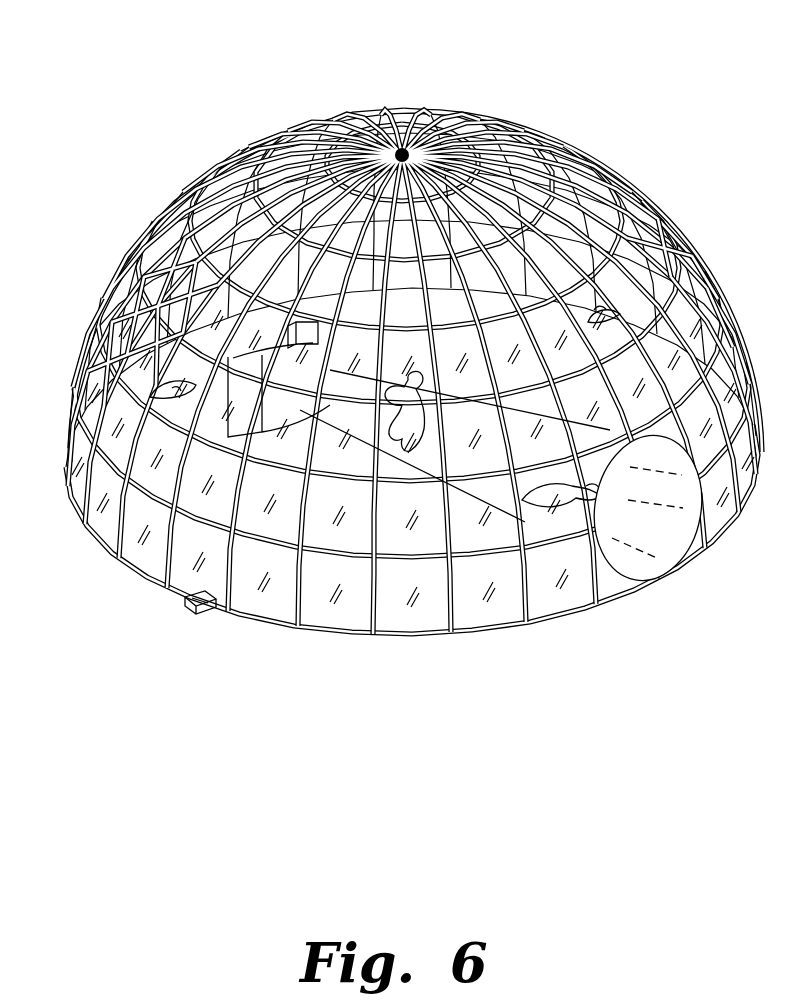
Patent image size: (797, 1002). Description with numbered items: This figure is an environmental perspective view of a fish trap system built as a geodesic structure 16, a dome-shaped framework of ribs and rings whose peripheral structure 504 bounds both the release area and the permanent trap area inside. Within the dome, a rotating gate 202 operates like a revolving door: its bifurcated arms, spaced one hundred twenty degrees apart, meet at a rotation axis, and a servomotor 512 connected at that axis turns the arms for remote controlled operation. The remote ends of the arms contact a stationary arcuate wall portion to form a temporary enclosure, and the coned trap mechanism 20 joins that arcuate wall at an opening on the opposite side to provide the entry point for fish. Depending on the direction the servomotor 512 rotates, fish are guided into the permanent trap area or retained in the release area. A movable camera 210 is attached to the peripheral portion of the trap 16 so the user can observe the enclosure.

The geodesic structure 16 is at (630, 173).
The coned trap mechanism 20 is at (670, 542).
The rotating gate 202 is at (400, 102).
The movable camera 210 is at (185, 606).
The peripheral structure 504 is at (190, 193).
The servomotor 512 is at (233, 156).